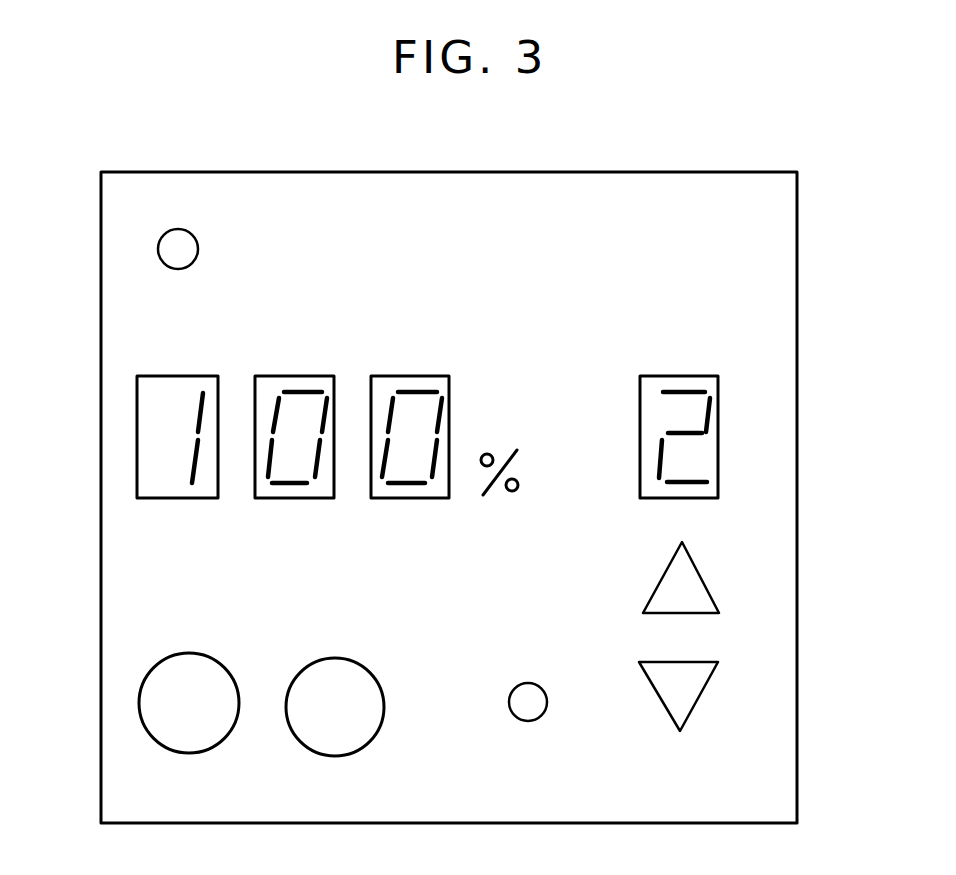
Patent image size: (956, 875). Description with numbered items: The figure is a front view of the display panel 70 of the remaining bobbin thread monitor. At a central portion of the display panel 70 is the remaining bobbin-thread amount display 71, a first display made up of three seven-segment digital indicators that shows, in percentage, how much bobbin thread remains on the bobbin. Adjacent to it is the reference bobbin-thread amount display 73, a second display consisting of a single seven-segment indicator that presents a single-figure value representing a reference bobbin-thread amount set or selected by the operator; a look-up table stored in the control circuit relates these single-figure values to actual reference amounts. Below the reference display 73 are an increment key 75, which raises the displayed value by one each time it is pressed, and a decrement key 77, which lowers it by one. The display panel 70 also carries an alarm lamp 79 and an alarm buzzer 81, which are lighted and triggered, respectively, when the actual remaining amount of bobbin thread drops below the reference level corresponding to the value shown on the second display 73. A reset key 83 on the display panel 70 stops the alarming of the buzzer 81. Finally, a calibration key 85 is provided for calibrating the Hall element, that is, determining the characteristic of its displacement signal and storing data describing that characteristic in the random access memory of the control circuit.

The display panel 70 is at (675, 182).
The remaining bobbin-thread amount display 71 is at (202, 498).
The reference bobbin-thread amount display 73 is at (718, 440).
The increment key 75 is at (698, 571).
The decrement key 77 is at (693, 696).
The alarm lamp 79 is at (177, 237).
The alarm buzzer 81 is at (529, 718).
The reset key 83 is at (335, 753).
The calibration key 85 is at (187, 748).